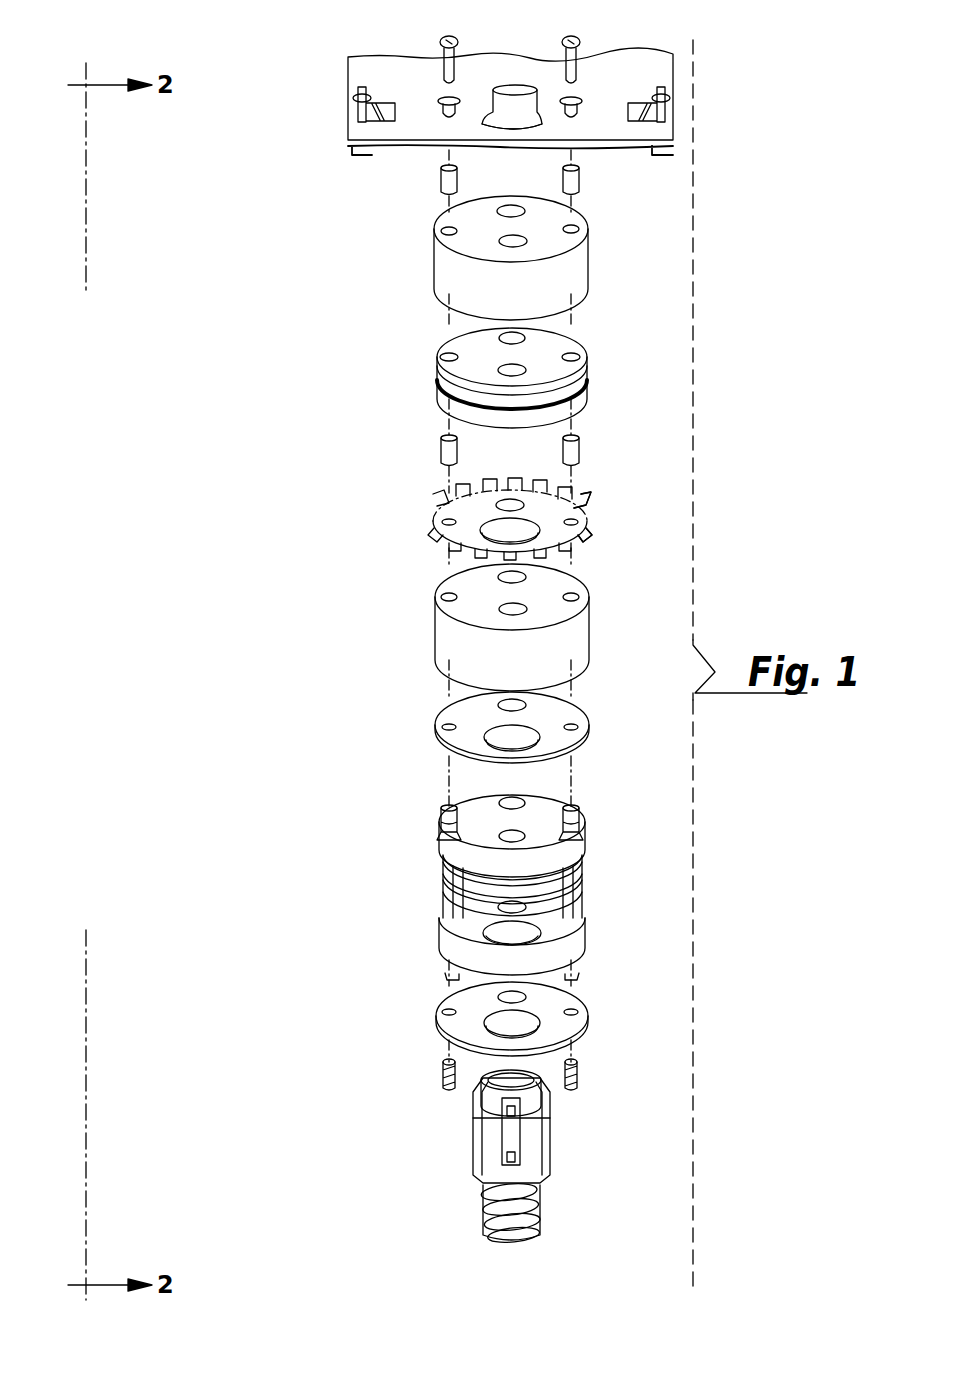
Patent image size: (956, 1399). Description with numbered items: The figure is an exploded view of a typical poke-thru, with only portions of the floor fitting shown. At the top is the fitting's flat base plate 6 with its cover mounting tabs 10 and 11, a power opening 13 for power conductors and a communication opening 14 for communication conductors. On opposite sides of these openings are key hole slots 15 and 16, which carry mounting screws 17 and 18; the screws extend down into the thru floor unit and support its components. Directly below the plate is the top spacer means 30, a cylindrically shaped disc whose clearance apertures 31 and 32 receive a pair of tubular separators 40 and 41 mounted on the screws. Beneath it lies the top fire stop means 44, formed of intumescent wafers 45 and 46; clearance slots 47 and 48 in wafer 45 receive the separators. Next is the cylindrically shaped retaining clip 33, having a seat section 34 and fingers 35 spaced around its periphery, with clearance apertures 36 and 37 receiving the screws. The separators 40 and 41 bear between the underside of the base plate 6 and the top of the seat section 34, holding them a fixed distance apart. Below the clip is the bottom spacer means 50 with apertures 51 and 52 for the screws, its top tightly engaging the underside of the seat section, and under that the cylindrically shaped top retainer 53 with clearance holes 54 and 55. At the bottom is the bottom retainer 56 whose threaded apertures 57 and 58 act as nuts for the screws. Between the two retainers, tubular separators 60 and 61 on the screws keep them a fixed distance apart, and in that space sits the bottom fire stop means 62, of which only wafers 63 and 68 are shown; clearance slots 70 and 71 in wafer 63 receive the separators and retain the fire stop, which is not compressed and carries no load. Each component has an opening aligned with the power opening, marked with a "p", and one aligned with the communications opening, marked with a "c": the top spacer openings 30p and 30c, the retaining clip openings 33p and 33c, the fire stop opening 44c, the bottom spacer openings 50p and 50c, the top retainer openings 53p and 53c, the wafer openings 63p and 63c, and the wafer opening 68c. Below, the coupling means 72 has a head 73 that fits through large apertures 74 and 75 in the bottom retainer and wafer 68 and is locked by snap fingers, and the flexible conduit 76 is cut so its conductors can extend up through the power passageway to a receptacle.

The flat base plate 6 is at (623, 62).
The cover mounting tab 10 is at (358, 87).
The cover mounting tab 11 is at (648, 92).
The power opening 13 is at (518, 130).
The communication opening 14 is at (490, 92).
The key hole slot 15 is at (444, 98).
The key hole slot 16 is at (580, 100).
The mounting screw 17 is at (442, 38).
The mounting screw 18 is at (566, 36).
The top spacer means 30 is at (383, 258).
The communication opening of top spacer means 30c is at (500, 213).
The power opening of top spacer means 30p is at (540, 267).
The clearance aperture 31 is at (441, 231).
The clearance aperture 32 is at (580, 228).
The retaining clip 33 is at (421, 724).
The communication opening of retaining clip 33c is at (514, 499).
The power opening of retaining clip 33p is at (546, 536).
The seat section 34 is at (590, 516).
The fingers 35 is at (592, 500).
The clearance aperture 36 is at (442, 518).
The clearance aperture 37 is at (569, 765).
The tubular separator 40 is at (442, 186).
The tubular separator 41 is at (566, 188).
The top fire stop means 44 is at (389, 359).
The communication opening of top fire stop means 44c is at (516, 332).
The wafer 45 is at (582, 380).
The wafer 46 is at (582, 402).
The clearance slot 47 is at (441, 357).
The clearance slot 48 is at (606, 338).
The bottom spacer means 50 is at (385, 617).
The communication opening of bottom spacer means 50c is at (500, 576).
The power opening of bottom spacer means 50p is at (531, 638).
The clearance aperture 51 is at (441, 598).
The clearance aperture 52 is at (580, 600).
The top retainer 53 is at (431, 722).
The communication opening of top retainer 53c is at (500, 704).
The power opening of top retainer 53p is at (545, 740).
The clearance hole 54 is at (444, 740).
The clearance hole 55 is at (578, 724).
The bottom retainer 56 is at (410, 1019).
The threaded aperture 57 is at (444, 1008).
The threaded aperture 58 is at (578, 1014).
The tubular separator 60 is at (452, 906).
The tubular separator 61 is at (445, 936).
The bottom fire stop means 62 is at (379, 875).
The wafer 63 is at (586, 855).
The communication opening of wafer 63c is at (509, 797).
The power opening of wafer 63p is at (525, 831).
The wafer 68 is at (584, 946).
The communication opening of wafer 68c is at (505, 912).
The clearance slot 70 is at (441, 822).
The clearance slot 71 is at (580, 822).
The coupling means 72 is at (411, 1126).
The head 73 is at (488, 1100).
The large aperture 74 is at (567, 1036).
The large aperture 75 is at (561, 951).
The flexible conduit 76 is at (487, 1208).